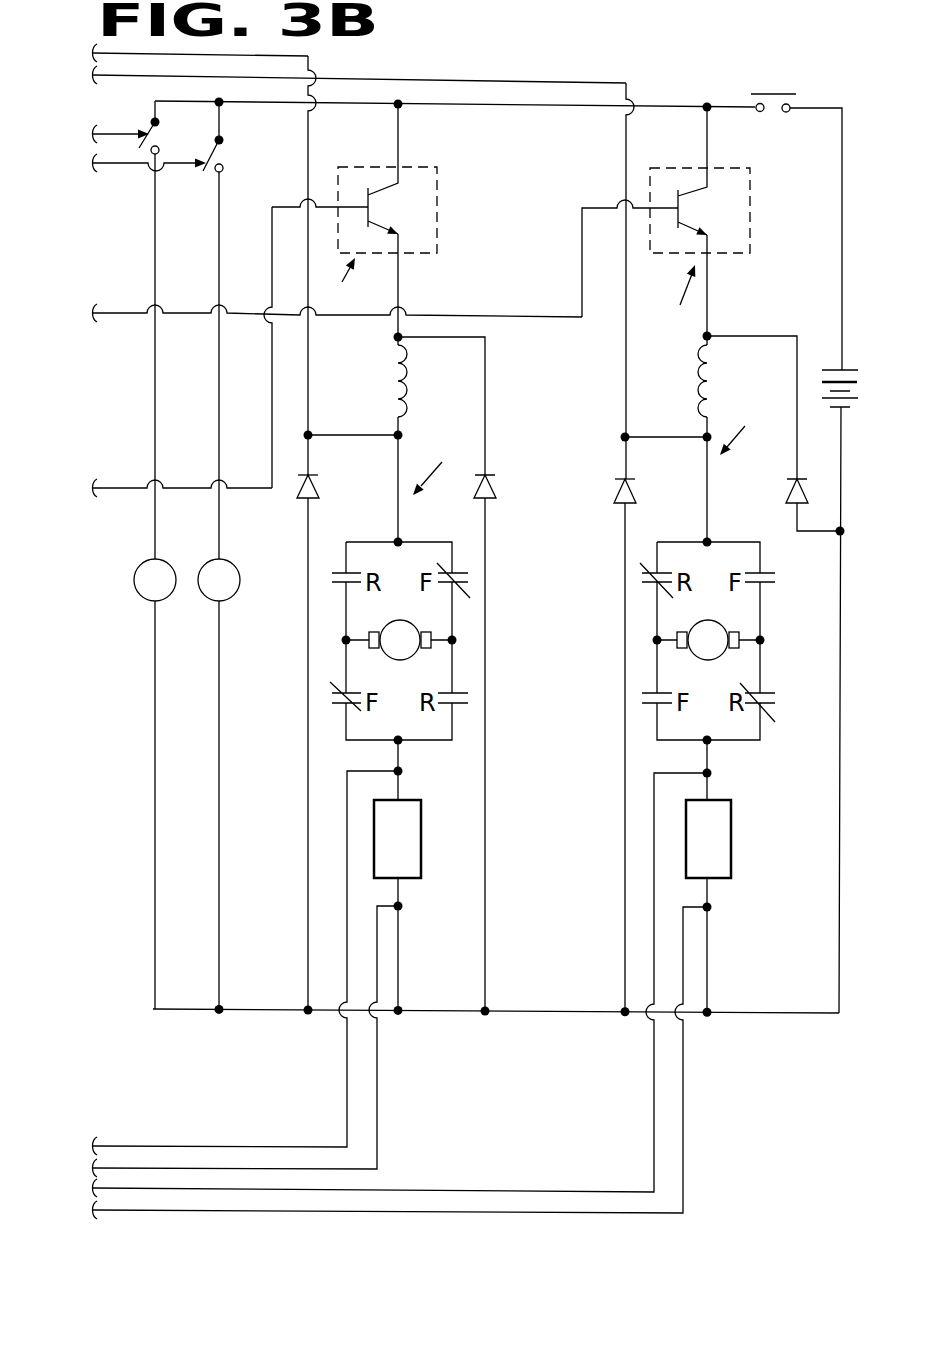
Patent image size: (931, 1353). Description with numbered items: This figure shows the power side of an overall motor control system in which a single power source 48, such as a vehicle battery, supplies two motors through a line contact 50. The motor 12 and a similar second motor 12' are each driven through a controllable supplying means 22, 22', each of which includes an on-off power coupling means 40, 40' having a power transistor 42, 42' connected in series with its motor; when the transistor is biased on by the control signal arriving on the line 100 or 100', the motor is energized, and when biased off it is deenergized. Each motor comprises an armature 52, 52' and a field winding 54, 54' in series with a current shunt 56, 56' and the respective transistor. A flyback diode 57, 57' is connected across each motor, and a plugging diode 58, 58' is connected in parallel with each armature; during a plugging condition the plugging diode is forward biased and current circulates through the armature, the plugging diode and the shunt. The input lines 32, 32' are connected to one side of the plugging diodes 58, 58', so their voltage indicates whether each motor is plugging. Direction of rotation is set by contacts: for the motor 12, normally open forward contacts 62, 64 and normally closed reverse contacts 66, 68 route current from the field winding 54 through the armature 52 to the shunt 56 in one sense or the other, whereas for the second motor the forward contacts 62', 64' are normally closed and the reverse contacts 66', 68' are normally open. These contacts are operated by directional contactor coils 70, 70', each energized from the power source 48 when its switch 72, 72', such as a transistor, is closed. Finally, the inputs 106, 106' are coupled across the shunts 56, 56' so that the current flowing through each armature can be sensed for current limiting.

The switch 72' is at (126, 324).
The switch 72 is at (200, 330).
The line 100' is at (305, 327).
The on-off power coupling means 40' is at (378, 184).
The power transistor 42' is at (401, 169).
The controllable supplying means 22' is at (345, 282).
The line 100 is at (583, 258).
The on-off power coupling means 40 is at (696, 234).
The power transistor 42 is at (709, 171).
The controllable supplying means 22 is at (675, 300).
The line contact 50 is at (783, 95).
The power source 48 is at (833, 368).
The input line 32' is at (338, 533).
The input line 32 is at (593, 547).
The field winding 54' is at (433, 381).
The field winding 54 is at (735, 381).
The second motor 12' is at (432, 466).
The motor 12 is at (740, 429).
The flyback diode 57' is at (476, 674).
The plugging diode 58' is at (337, 503).
The plugging diode 58 is at (598, 512).
The flyback diode 57 is at (773, 433).
The directional contactor coil 70' is at (169, 767).
The directional contactor coil 70 is at (233, 767).
The reverse contact 66' is at (313, 593).
The forward contact 62' is at (483, 573).
The forward contact 64' is at (313, 713).
The reverse contact 68' is at (483, 683).
The armature 52' is at (399, 630).
The reverse contact 66 is at (625, 592).
The forward contact 62 is at (779, 567).
The forward contact 64 is at (625, 719).
The reverse contact 68 is at (776, 695).
The armature 52 is at (709, 630).
The current shunt 56' is at (424, 836).
The current shunt 56 is at (738, 834).
The inputs 106' is at (245, 970).
The inputs 106 is at (400, 993).